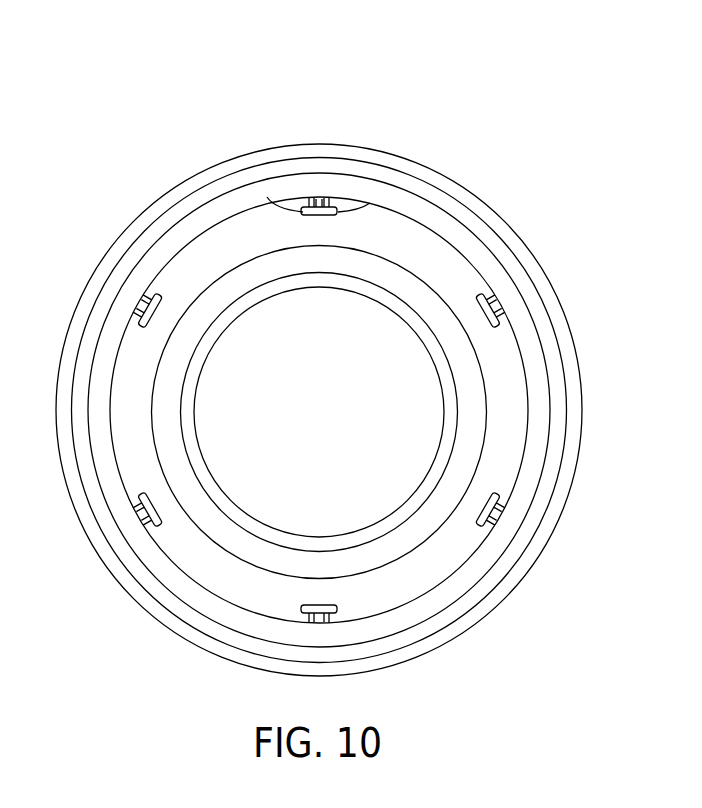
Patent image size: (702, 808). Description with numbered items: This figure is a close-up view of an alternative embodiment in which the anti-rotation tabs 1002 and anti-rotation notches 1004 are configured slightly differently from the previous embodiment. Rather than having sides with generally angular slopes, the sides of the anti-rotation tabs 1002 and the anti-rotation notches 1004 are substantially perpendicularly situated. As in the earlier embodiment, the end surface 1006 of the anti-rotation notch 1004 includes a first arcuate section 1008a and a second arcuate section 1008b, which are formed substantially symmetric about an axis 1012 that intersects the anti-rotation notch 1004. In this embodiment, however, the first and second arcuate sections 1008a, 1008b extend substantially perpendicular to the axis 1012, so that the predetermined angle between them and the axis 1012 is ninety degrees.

The anti-rotation tab 1002 is at (322, 197).
The anti-rotation notch 1004 is at (322, 225).
The end surface 1006 is at (306, 215).
The first arcuate section 1008a is at (370, 203).
The second arcuate section 1008b is at (267, 197).
The axis 1012 is at (320, 206).